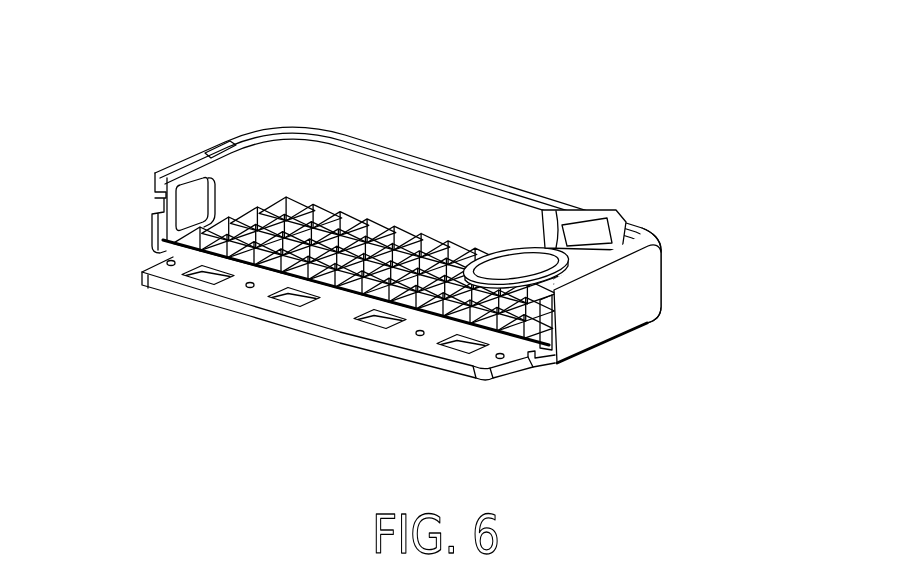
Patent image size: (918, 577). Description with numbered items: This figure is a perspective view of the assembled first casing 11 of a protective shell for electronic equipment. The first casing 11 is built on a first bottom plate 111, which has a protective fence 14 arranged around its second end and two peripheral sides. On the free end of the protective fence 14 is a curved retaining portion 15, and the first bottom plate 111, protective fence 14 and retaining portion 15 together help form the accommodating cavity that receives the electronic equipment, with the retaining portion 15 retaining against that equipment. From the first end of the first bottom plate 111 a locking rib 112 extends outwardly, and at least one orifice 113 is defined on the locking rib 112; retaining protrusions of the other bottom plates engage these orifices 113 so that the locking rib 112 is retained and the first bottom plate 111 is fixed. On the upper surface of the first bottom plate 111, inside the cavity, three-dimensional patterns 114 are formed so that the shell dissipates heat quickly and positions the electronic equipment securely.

The first casing 11 is at (52, 29).
The protective fence 14 is at (305, 172).
The retaining portion 15 is at (597, 270).
The first bottom plate 111 is at (493, 340).
The locking rib 112 is at (419, 339).
The orifice 113 is at (377, 322).
The three-dimensional patterns 114 is at (385, 245).